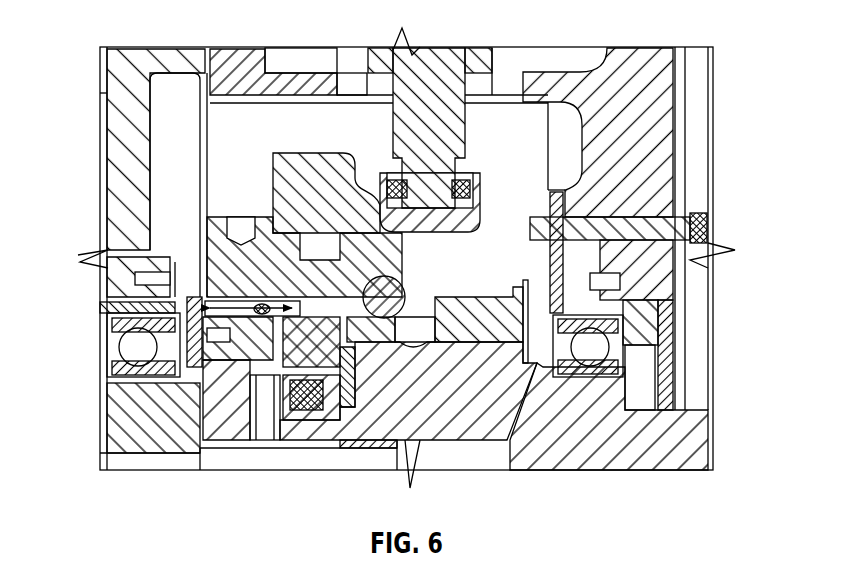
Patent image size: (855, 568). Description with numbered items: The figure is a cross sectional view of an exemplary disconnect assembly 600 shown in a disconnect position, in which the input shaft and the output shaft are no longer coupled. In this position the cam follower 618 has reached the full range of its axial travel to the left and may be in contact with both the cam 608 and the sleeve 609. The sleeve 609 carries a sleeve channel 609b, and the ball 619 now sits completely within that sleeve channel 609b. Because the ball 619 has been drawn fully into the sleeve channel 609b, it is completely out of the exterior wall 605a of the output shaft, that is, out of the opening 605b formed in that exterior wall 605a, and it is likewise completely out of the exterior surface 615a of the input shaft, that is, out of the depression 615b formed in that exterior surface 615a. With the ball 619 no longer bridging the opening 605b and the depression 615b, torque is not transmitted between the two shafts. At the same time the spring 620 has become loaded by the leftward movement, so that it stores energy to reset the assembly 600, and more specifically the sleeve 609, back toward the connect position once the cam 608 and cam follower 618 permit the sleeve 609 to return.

The disconnect assembly 600 is at (264, 128).
The cam 608 is at (293, 160).
The sleeve 609 is at (325, 280).
The cam follower 618 is at (445, 220).
The opening 605b is at (417, 333).
The exterior wall 605a is at (507, 313).
The spring 620 is at (200, 382).
The sleeve channel 609b is at (285, 373).
The ball 619 is at (372, 377).
The depression 615b is at (413, 360).
The exterior surface 615a is at (460, 360).